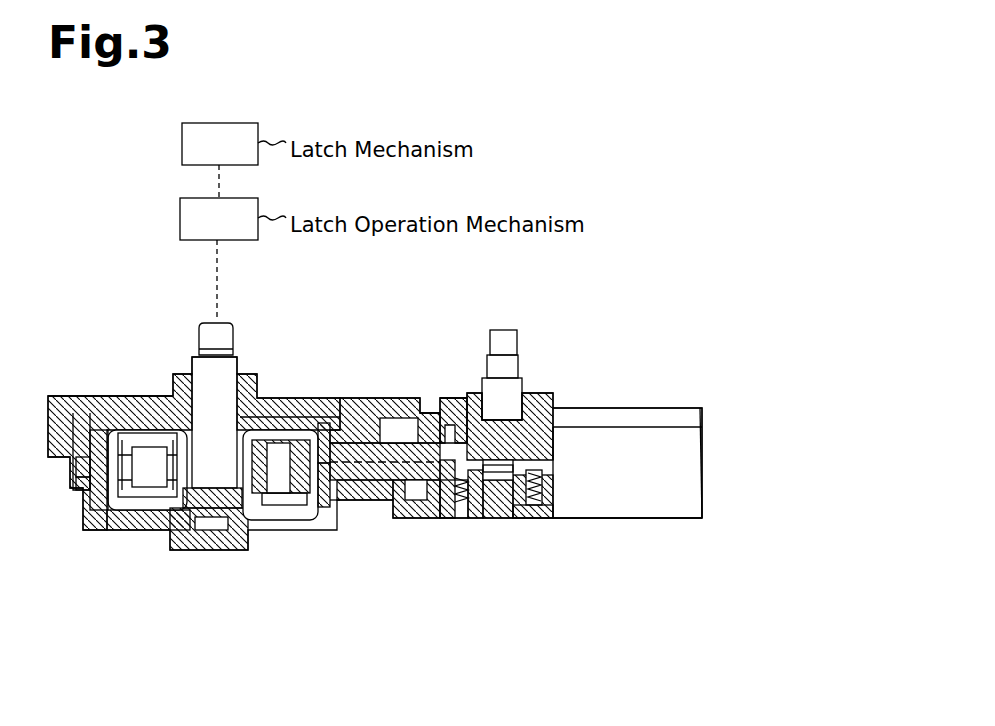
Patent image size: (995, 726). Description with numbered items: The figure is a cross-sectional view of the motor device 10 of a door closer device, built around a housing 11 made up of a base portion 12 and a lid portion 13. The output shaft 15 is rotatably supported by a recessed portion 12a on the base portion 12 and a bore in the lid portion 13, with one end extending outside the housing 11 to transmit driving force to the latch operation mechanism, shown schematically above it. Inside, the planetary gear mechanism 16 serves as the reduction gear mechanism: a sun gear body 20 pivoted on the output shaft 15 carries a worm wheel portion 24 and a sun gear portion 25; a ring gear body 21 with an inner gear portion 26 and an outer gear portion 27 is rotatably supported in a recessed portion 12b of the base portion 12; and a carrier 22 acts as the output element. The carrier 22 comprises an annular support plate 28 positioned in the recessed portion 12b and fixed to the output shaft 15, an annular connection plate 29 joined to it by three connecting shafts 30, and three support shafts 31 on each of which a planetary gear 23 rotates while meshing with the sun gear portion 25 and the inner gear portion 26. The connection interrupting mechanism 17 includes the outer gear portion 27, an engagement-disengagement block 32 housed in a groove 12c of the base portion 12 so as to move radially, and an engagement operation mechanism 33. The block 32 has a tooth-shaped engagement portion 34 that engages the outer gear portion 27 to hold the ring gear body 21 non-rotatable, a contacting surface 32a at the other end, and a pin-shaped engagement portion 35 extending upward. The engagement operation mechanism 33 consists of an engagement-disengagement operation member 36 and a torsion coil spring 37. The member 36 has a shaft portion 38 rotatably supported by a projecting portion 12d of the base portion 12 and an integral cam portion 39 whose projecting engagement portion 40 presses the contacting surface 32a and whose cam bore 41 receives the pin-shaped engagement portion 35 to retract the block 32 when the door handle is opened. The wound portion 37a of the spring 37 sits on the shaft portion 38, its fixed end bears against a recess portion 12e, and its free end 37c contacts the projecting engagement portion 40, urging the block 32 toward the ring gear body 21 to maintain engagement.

The motor device 10 is at (625, 293).
The housing 11 is at (752, 385).
The base portion 12 is at (692, 438).
The lid portion 13 is at (688, 406).
The recessed portion 12a is at (205, 530).
The recessed portion 12b is at (95, 515).
The groove 12c is at (372, 500).
The projecting portion 12d is at (503, 500).
The recess portion 12e is at (537, 500).
The output shaft 15 is at (199, 338).
The planetary gear mechanism 16 is at (123, 310).
The connection interrupting mechanism 17 is at (466, 327).
The sun gear body 20 is at (130, 420).
The ring gear body 21 is at (300, 470).
The carrier 22 is at (262, 412).
The planetary gear 23 is at (246, 457).
The worm wheel portion 24 is at (108, 420).
The sun gear portion 25 is at (244, 470).
The inner gear portion 26 is at (90, 483).
The outer gear portion 27 is at (86, 468).
The annular support plate 28 is at (272, 490).
The annular connection plate 29 is at (302, 412).
The connecting shaft 30 is at (150, 470).
The support shaft 31 is at (272, 490).
The engagement-disengagement block 32 is at (401, 462).
The contacting surface 32a is at (423, 480).
The engagement operation mechanism 33 is at (445, 390).
The tooth-shaped engagement portion 34 is at (335, 500).
The pin-shaped engagement portion 35 is at (372, 440).
The engagement-disengagement operation member 36 is at (548, 455).
The torsion coil spring 37 is at (540, 486).
The wound portion 37a is at (548, 498).
The free end 37c is at (468, 508).
The shaft portion 38 is at (540, 445).
The cam portion 39 is at (396, 430).
The projecting engagement portion 40 is at (460, 490).
The cam bore 41 is at (388, 447).